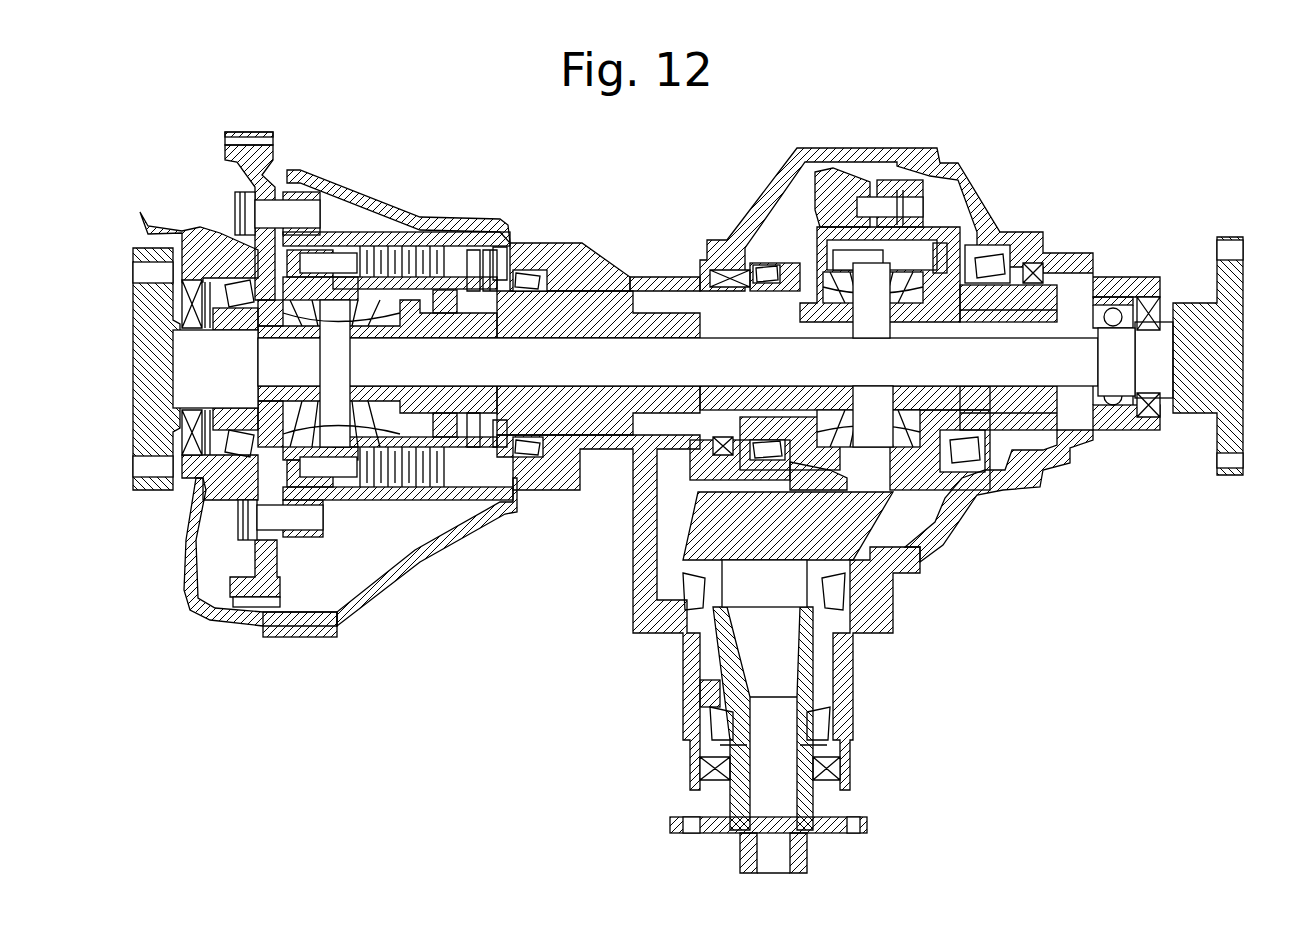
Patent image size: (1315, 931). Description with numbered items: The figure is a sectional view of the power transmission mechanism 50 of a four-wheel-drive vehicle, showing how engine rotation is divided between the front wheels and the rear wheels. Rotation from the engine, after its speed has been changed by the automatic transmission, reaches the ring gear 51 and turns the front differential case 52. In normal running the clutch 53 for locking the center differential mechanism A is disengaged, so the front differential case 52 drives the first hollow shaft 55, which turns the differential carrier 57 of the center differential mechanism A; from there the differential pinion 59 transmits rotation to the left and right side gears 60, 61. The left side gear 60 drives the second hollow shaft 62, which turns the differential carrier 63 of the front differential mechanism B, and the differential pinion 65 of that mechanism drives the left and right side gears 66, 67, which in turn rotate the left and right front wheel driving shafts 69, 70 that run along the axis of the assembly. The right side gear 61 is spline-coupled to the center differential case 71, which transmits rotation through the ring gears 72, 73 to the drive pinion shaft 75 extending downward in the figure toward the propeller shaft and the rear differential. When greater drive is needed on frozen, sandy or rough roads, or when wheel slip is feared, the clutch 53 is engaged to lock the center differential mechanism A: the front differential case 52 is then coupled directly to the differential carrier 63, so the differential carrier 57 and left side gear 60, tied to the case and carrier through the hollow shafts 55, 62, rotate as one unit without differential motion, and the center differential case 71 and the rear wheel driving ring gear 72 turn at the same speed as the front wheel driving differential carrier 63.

The final drive unit 50 is at (305, 738).
The ring gear 51 is at (268, 152).
The front differential case 52 is at (360, 230).
The clutch 53 is at (510, 225).
The first hollow shaft 55 is at (647, 272).
The differential carrier 57 is at (800, 267).
The differential pinion 59 is at (802, 258).
The left side gear 60 is at (985, 485).
The right side gear 61 is at (1068, 420).
The second hollow shaft 62 is at (673, 318).
The differential carrier 63 is at (337, 495).
The differential pinion 65 is at (308, 482).
The left side gear 66 is at (255, 412).
The right side gear 67 is at (440, 455).
The left front wheel driving shaft 69 is at (133, 372).
The right front wheel driving shaft 70 is at (1245, 350).
The center differential case 71 is at (980, 227).
The ring gear 72 is at (838, 186).
The ring gear 73 is at (715, 518).
The drive pinion shaft 75 is at (787, 795).
The center differential mechanism A is at (950, 252).
The front differential mechanism B is at (337, 437).